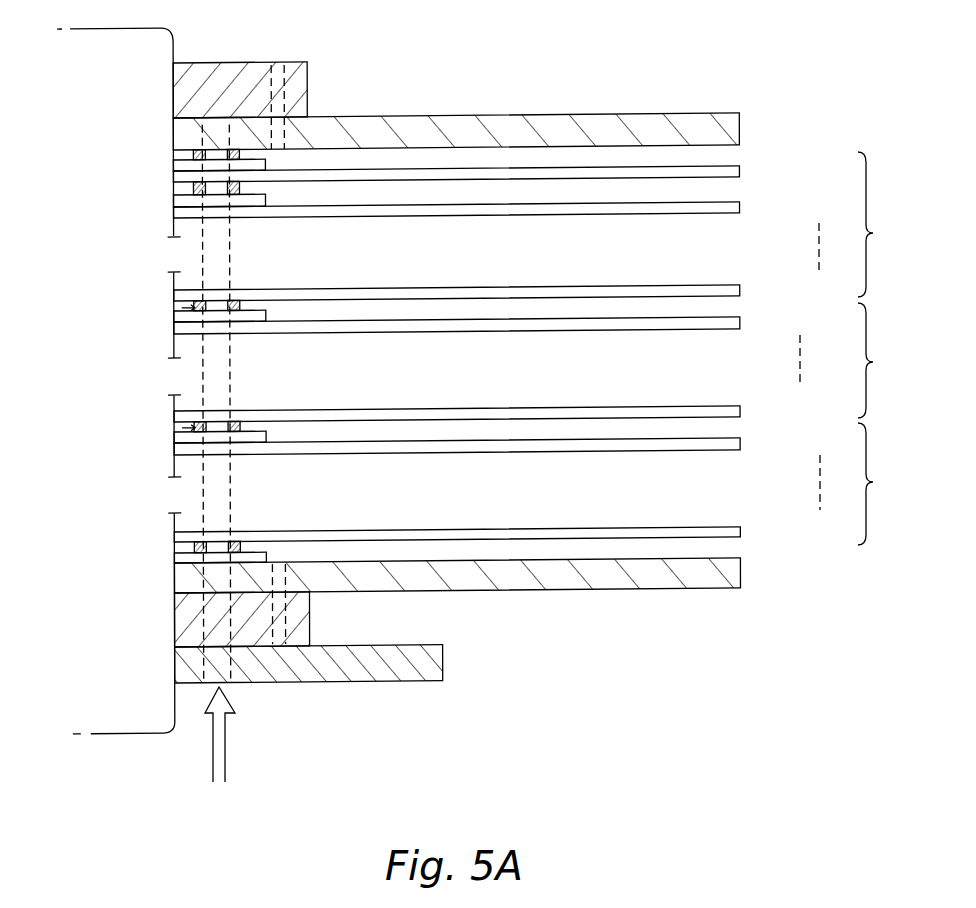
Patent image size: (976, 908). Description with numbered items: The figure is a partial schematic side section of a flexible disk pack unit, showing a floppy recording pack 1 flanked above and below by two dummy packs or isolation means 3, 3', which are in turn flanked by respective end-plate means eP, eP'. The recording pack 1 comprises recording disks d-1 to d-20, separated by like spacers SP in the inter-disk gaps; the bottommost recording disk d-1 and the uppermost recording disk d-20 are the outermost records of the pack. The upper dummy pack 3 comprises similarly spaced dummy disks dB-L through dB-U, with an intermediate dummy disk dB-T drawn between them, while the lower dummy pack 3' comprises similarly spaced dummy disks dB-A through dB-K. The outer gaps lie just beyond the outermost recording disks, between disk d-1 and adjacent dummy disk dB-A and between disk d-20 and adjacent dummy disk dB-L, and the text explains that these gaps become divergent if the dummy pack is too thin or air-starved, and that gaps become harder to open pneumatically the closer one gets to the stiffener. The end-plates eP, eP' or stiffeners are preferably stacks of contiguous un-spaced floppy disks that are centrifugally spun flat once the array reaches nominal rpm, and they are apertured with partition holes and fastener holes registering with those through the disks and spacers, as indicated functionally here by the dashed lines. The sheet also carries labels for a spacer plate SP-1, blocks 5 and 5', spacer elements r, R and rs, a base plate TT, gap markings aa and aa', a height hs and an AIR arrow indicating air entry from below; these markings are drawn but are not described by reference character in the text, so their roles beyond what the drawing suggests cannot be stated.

The spacer plate SP-1 is at (174, 53).
The end block 5 is at (273, 74).
The end-plate eP is at (482, 104).
The spacer ring r is at (197, 148).
The spacer SP is at (178, 166).
The ring spacer R is at (185, 190).
The dummy disk dB-U is at (740, 173).
The dummy plate dB-T is at (740, 208).
The dummy pack 3 is at (858, 224).
The dummy disk dB-L is at (740, 292).
The recording disk d-20 is at (740, 325).
The recording pack 1 is at (849, 360).
The recording disk d-1 is at (740, 412).
The dummy disk dB-A is at (740, 445).
The dummy pack 3' is at (863, 484).
The dummy disk dB-K is at (740, 530).
The end-plate eP' is at (489, 585).
The lower end block 5' is at (280, 619).
The base plate TT is at (442, 665).
The air flow AIR is at (225, 753).
The spacer height hs is at (226, 306).
The gap aa is at (253, 345).
The spacer rs is at (243, 425).
The gap aa' is at (260, 459).